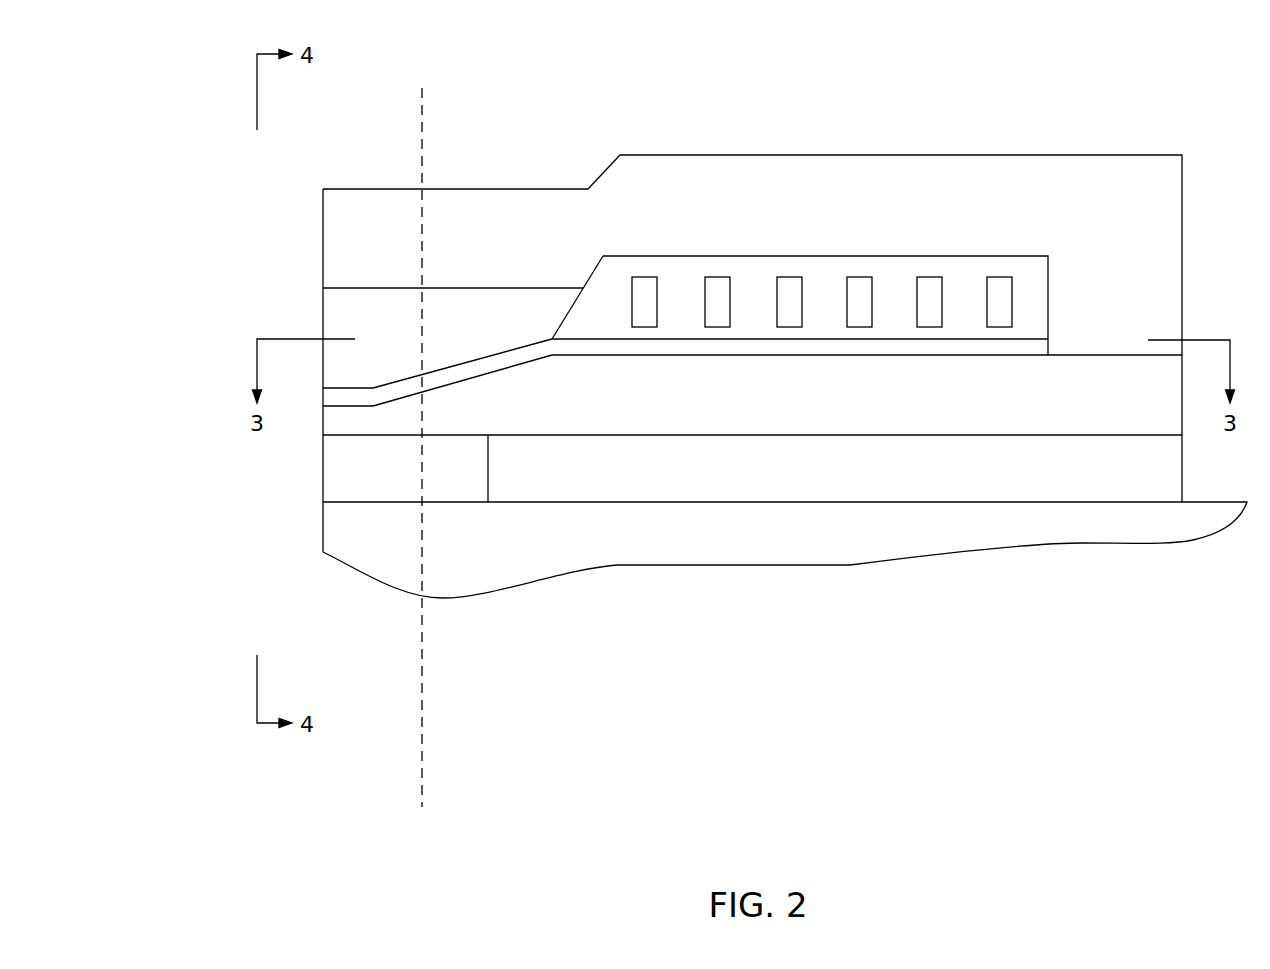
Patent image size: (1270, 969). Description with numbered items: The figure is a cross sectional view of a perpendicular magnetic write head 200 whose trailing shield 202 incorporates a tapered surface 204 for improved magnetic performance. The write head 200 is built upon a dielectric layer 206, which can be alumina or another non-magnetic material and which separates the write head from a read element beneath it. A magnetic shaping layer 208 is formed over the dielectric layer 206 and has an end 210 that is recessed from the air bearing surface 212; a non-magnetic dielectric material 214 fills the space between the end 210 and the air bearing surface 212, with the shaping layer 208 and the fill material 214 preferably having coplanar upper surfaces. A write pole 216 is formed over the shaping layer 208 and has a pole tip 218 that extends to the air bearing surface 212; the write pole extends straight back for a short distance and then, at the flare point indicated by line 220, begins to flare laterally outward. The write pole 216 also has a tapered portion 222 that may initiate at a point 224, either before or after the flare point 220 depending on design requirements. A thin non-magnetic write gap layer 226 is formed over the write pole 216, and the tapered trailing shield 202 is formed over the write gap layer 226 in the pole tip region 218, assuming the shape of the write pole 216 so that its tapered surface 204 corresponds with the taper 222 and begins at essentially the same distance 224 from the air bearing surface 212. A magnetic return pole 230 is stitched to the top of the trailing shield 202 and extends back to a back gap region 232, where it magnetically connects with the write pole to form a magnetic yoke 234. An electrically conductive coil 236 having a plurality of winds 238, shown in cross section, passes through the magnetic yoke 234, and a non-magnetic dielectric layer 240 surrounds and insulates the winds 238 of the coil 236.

The write head 200 is at (677, 440).
The trailing shield 202 is at (355, 322).
The tapered surface 204 is at (495, 353).
The dielectric layer 206 is at (710, 523).
The magnetic shaping layer 208 is at (698, 472).
The end 210 is at (490, 465).
The air bearing surface 212 is at (320, 505).
The non-magnetic dielectric material 214 is at (368, 468).
The write pole 216 is at (707, 392).
The pole tip 218 is at (340, 422).
The flare point 220 is at (422, 667).
The tapered portion 222 is at (432, 387).
The point 224 is at (373, 407).
The write gap layer 226 is at (695, 348).
The magnetic return pole 230 is at (785, 195).
The back gap region 232 is at (1105, 300).
The magnetic yoke 234 is at (1036, 152).
The electrically conductive coil 236 is at (799, 262).
The winds 238 is at (935, 277).
The non-magnetic dielectric layer 240 is at (762, 280).